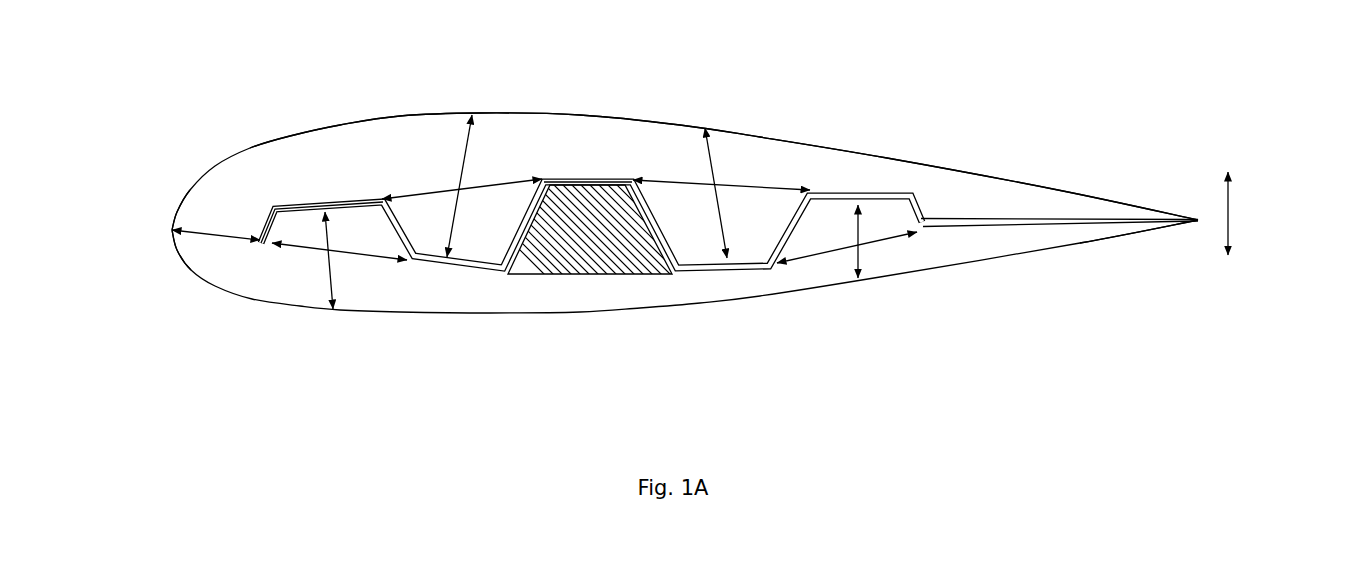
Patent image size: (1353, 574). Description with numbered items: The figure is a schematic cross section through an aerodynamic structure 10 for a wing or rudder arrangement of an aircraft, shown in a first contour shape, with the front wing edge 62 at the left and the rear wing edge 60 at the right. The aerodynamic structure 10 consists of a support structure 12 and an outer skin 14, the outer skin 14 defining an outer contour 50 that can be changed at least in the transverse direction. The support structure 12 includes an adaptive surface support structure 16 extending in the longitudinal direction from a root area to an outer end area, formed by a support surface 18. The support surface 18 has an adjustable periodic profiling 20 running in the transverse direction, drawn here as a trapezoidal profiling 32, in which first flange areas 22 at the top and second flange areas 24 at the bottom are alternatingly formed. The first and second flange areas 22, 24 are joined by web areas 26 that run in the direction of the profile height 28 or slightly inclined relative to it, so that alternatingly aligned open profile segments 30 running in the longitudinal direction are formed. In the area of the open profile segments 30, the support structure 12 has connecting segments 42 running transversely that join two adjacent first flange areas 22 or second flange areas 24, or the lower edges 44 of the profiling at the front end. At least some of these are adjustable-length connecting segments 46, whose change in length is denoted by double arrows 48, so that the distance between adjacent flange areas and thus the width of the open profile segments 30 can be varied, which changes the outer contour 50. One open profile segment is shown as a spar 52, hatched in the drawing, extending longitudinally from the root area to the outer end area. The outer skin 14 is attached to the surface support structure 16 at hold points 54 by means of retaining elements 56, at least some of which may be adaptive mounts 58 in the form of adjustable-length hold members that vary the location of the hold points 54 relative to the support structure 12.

The aerodynamic structure 10 is at (801, 102).
The support structure 12 is at (505, 156).
The outer skin 14 is at (887, 157).
The adaptive surface support structure 16 is at (389, 176).
The support surface 18 is at (473, 275).
The periodic profiling 20 is at (758, 280).
The first flange areas 22 is at (331, 201).
The second flange areas 24 is at (428, 266).
The web areas 26 is at (391, 244).
The profile height 28 is at (1230, 213).
The open profile segments 30 is at (490, 198).
The trapezoidal profiling 32 is at (530, 283).
The connecting segments 42 is at (440, 186).
The lower edges 44 is at (262, 244).
The adjustable-length connecting segments 46 is at (418, 192).
The double arrows 48 is at (523, 181).
The outer contour 50 is at (1059, 189).
The spar 52 is at (590, 254).
The hold points 54 is at (703, 125).
The retaining elements 56 is at (713, 158).
The adaptive mounts 58 is at (723, 233).
The rear wing edge 60 is at (1199, 206).
The front wing edge 62 is at (161, 202).